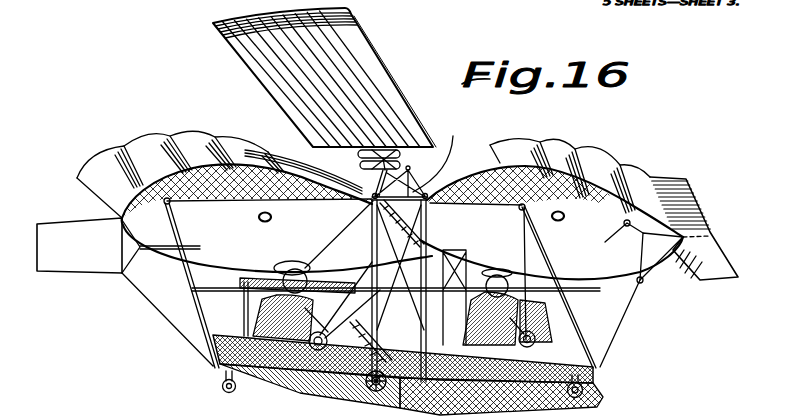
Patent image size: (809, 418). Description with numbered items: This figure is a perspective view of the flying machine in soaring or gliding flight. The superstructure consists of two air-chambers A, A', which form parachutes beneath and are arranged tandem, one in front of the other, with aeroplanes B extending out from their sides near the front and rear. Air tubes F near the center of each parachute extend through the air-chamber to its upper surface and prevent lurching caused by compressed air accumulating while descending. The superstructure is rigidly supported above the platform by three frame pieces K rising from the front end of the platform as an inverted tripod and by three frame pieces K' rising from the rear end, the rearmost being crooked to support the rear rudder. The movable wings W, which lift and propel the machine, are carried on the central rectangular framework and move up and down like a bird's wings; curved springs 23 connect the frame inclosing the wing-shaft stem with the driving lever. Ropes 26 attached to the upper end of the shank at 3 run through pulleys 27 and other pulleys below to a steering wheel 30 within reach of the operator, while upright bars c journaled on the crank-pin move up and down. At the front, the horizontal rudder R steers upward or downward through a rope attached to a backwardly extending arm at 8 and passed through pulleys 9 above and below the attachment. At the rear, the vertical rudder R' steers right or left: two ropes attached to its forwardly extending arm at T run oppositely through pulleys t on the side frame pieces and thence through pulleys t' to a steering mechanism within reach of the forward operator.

The movable planes or wings W is at (324, 77).
The curved springs 23 is at (358, 156).
The upper end of the shank or elbow 3 is at (400, 175).
The pulleys 27 is at (437, 154).
The air tubes F is at (402, 221).
The aeroplanes B is at (153, 143).
The air-chambers A is at (301, 156).
The rear aeroplane A' is at (557, 160).
The horizontal rudder R is at (694, 228).
The vertical rudder R' is at (81, 228).
The forwardly extending arm of the rear rudder T is at (178, 240).
The pulleys t is at (268, 267).
The pulleys t' is at (518, 271).
The rear frame pieces K' is at (169, 285).
The ropes 26 is at (372, 250).
The steering wheel 30 is at (298, 398).
The upright bars c is at (397, 331).
The front frame pieces K is at (602, 287).
The pulleys 9 is at (624, 221).
The backwardly extending arm of the horizontal rudder 8 is at (651, 256).